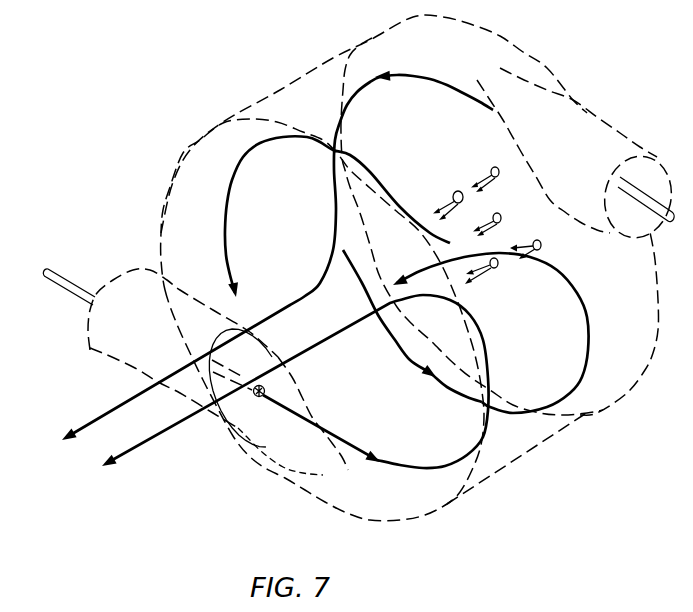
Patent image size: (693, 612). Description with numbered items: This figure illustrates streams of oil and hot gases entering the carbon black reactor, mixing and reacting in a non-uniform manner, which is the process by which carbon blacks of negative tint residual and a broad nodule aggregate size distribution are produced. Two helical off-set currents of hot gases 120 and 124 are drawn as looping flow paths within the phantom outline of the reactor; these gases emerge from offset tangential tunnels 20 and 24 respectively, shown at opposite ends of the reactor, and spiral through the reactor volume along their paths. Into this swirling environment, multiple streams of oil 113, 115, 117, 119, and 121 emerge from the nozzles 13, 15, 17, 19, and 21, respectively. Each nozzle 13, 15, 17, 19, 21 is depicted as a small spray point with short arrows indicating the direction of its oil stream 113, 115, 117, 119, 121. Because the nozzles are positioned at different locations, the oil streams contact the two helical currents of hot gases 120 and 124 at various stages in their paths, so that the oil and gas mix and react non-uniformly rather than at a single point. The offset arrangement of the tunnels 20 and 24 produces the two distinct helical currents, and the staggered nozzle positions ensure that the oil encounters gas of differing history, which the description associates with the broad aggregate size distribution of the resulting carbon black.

The nozzle 13 is at (503, 219).
The nozzle 15 is at (497, 168).
The nozzle 17 is at (502, 265).
The nozzle 19 is at (457, 191).
The offset tangential tunnel 20 is at (643, 155).
The nozzle 21 is at (543, 244).
The offset tangential tunnel 24 is at (138, 268).
The stream of oil 113 is at (488, 218).
The stream of oil 115 is at (478, 180).
The stream of oil 117 is at (481, 279).
The stream of oil 119 is at (436, 204).
The helical off-set current of hot gases 120 is at (409, 73).
The stream of oil 121 is at (512, 247).
The helical off-set current of hot gases 124 is at (417, 468).